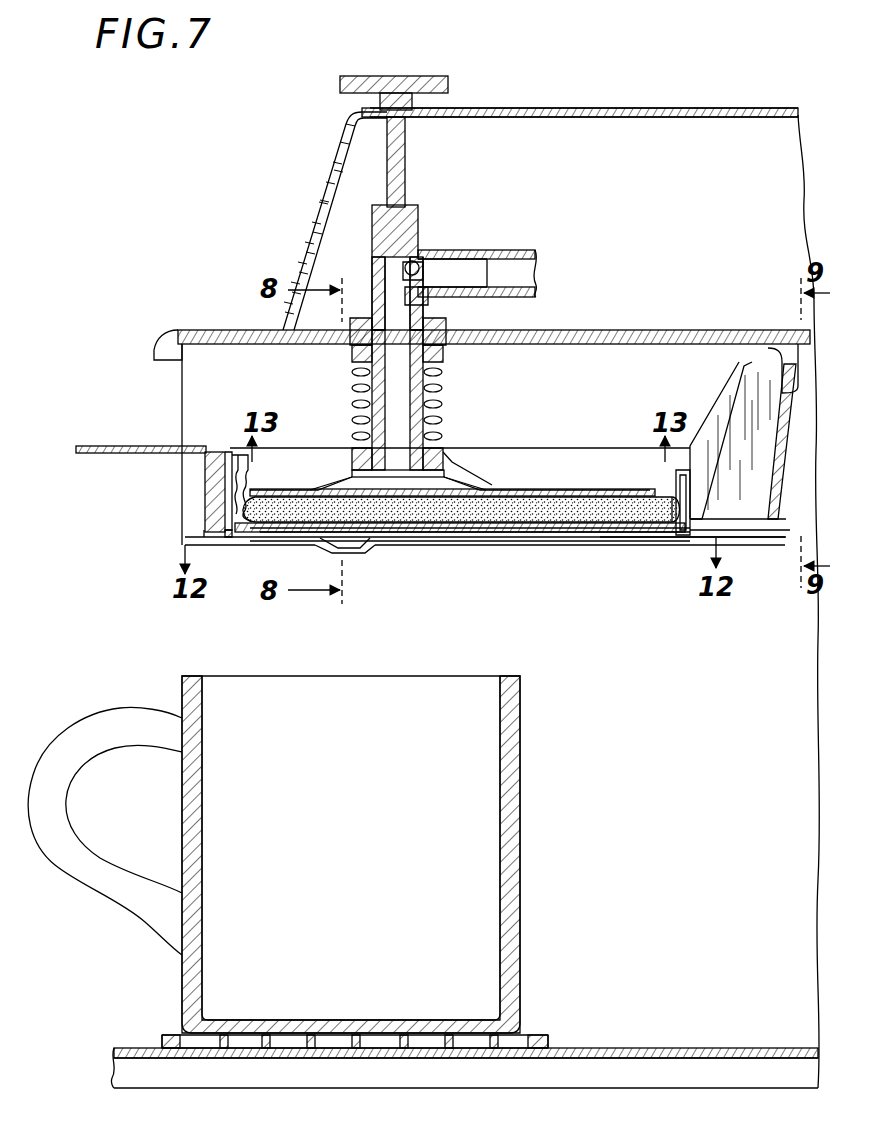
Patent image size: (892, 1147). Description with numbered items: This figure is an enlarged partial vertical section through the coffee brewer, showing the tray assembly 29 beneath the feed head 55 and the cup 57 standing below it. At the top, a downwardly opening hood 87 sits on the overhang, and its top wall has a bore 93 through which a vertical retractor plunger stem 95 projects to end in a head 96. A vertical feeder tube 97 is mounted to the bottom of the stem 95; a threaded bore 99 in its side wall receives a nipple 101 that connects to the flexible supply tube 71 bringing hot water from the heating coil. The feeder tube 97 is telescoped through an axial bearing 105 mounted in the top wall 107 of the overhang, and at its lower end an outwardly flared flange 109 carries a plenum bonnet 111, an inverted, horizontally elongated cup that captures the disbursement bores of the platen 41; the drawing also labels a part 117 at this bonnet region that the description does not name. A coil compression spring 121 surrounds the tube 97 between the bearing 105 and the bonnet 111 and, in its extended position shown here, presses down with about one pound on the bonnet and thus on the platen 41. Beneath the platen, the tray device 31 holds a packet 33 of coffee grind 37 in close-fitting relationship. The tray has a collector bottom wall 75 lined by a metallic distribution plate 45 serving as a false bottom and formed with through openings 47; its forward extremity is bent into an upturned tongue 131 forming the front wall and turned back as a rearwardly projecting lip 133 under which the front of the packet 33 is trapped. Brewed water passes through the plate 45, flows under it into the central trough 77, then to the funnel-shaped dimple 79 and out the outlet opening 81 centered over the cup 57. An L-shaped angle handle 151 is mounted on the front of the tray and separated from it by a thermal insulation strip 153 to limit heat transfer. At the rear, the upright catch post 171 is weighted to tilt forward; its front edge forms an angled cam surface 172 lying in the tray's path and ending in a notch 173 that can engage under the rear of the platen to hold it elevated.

The retractor plunger stem 95 is at (360, 74).
The head 96 is at (434, 76).
The hood 87 is at (658, 96).
The bore 93 is at (408, 118).
The feeder tube 97 is at (416, 212).
The threaded bore 99 is at (418, 266).
The flexible supply tube 71 is at (508, 250).
The nipple 101 is at (430, 294).
The axial bearing 105 is at (360, 318).
The top wall 107 is at (664, 330).
The notch 173 is at (772, 346).
The catch post 171 is at (746, 372).
The cam surface 172 is at (724, 396).
The feed head 55 is at (344, 414).
The coil compression spring 121 is at (443, 386).
The angle handle 151 is at (94, 447).
The upturned tongue 131 is at (206, 466).
The rearwardly projecting lip 133 is at (246, 452).
The thermal insulation strip 153 is at (220, 536).
The tray assembly 29 is at (160, 512).
The plenum bonnet 111 is at (350, 472).
The strut 117 is at (444, 456).
The outwardly flared flange 109 is at (462, 478).
The platen 41 is at (558, 488).
The coffee grind 37 is at (576, 504).
The packet 33 is at (648, 484).
The funnel shaped dimple 79 is at (380, 547).
The outlet opening 81 is at (346, 556).
The through openings 47 is at (434, 538).
The collector bottom wall 75 is at (492, 542).
The trough 77 is at (530, 544).
The distribution plate 45 is at (554, 540).
The tray device 31 is at (624, 544).
The cup 57 is at (520, 826).